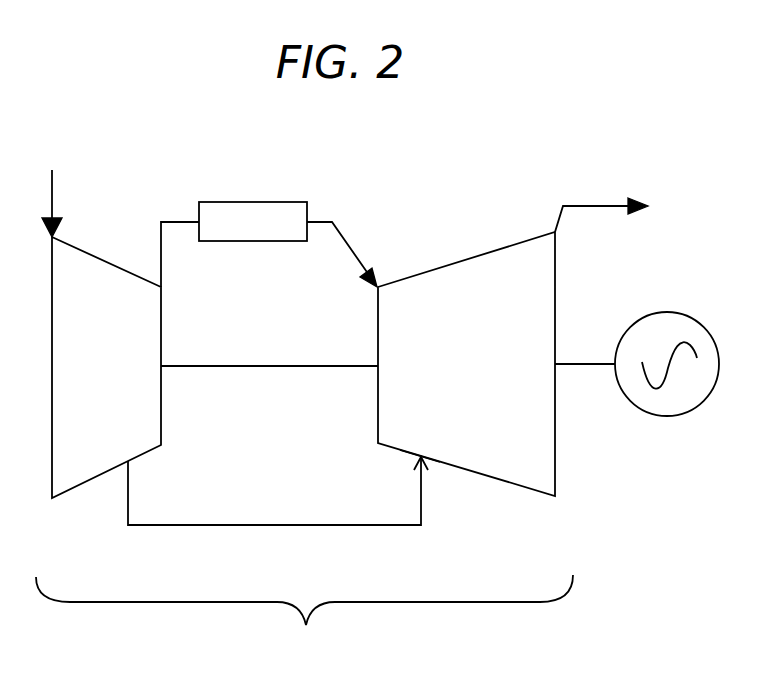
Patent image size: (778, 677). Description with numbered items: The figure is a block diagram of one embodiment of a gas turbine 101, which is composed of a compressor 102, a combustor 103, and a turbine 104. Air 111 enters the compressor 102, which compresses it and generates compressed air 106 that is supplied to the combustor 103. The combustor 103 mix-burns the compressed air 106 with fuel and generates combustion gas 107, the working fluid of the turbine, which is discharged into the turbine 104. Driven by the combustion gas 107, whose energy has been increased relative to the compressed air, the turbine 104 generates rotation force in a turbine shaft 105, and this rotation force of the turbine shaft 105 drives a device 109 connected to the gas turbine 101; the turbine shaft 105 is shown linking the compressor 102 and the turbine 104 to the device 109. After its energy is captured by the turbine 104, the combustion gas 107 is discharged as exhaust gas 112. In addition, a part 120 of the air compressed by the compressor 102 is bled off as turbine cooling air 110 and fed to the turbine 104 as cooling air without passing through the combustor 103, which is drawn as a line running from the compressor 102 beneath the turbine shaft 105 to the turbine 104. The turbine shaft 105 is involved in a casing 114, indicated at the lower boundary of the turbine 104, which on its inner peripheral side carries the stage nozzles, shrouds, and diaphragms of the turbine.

The gas turbine 101 is at (304, 615).
The compressor 102 is at (102, 287).
The combustor 103 is at (265, 212).
The turbine 104 is at (473, 283).
The turbine shaft 105 is at (270, 358).
The compressed air 106 is at (175, 220).
The combustion gas 107 is at (350, 243).
The device 109 is at (673, 417).
The turbine cooling air 110 is at (220, 525).
The air 111 is at (52, 190).
The exhaust gas 112 is at (621, 213).
The casing 114 is at (448, 472).
The part of the air compressed by the compressor 120 is at (180, 554).